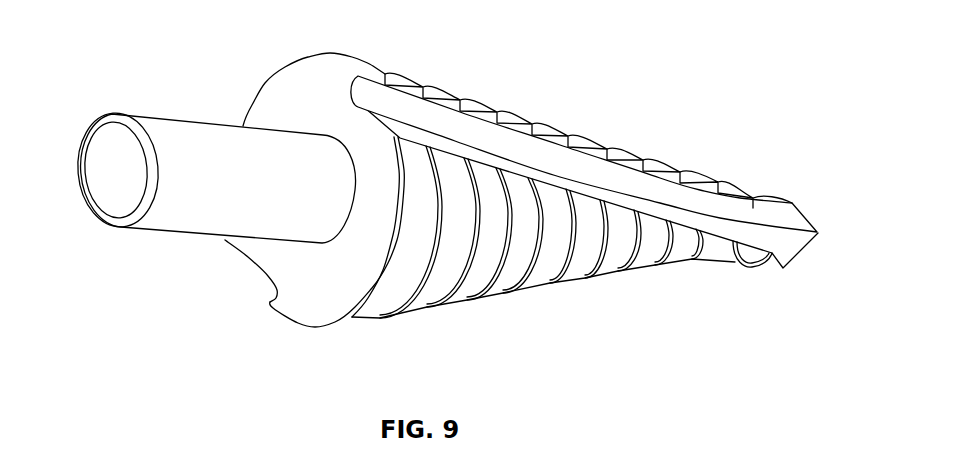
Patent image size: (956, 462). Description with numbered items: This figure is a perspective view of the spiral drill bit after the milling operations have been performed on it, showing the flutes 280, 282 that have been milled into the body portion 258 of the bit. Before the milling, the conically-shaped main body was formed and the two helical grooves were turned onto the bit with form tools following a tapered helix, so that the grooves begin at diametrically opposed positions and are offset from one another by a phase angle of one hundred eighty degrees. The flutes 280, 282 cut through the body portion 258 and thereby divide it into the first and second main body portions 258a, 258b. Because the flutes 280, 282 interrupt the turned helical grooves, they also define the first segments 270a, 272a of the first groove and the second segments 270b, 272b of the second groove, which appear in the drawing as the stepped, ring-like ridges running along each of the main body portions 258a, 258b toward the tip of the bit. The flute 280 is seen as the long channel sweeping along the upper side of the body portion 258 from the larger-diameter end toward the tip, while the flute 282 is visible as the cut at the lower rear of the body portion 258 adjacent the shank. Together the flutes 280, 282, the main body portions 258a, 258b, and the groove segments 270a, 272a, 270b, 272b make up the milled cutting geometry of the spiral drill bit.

The body portion 258 is at (565, 273).
The first main body portion 258a is at (628, 150).
The second main body portion 258b is at (487, 293).
The first segment of the first groove 270a is at (697, 180).
The second segment of the second groove 270b is at (718, 260).
The first segment of the first groove 272a is at (660, 168).
The second segment of the second groove 272b is at (677, 270).
The flute 280 is at (484, 140).
The flute 282 is at (264, 283).